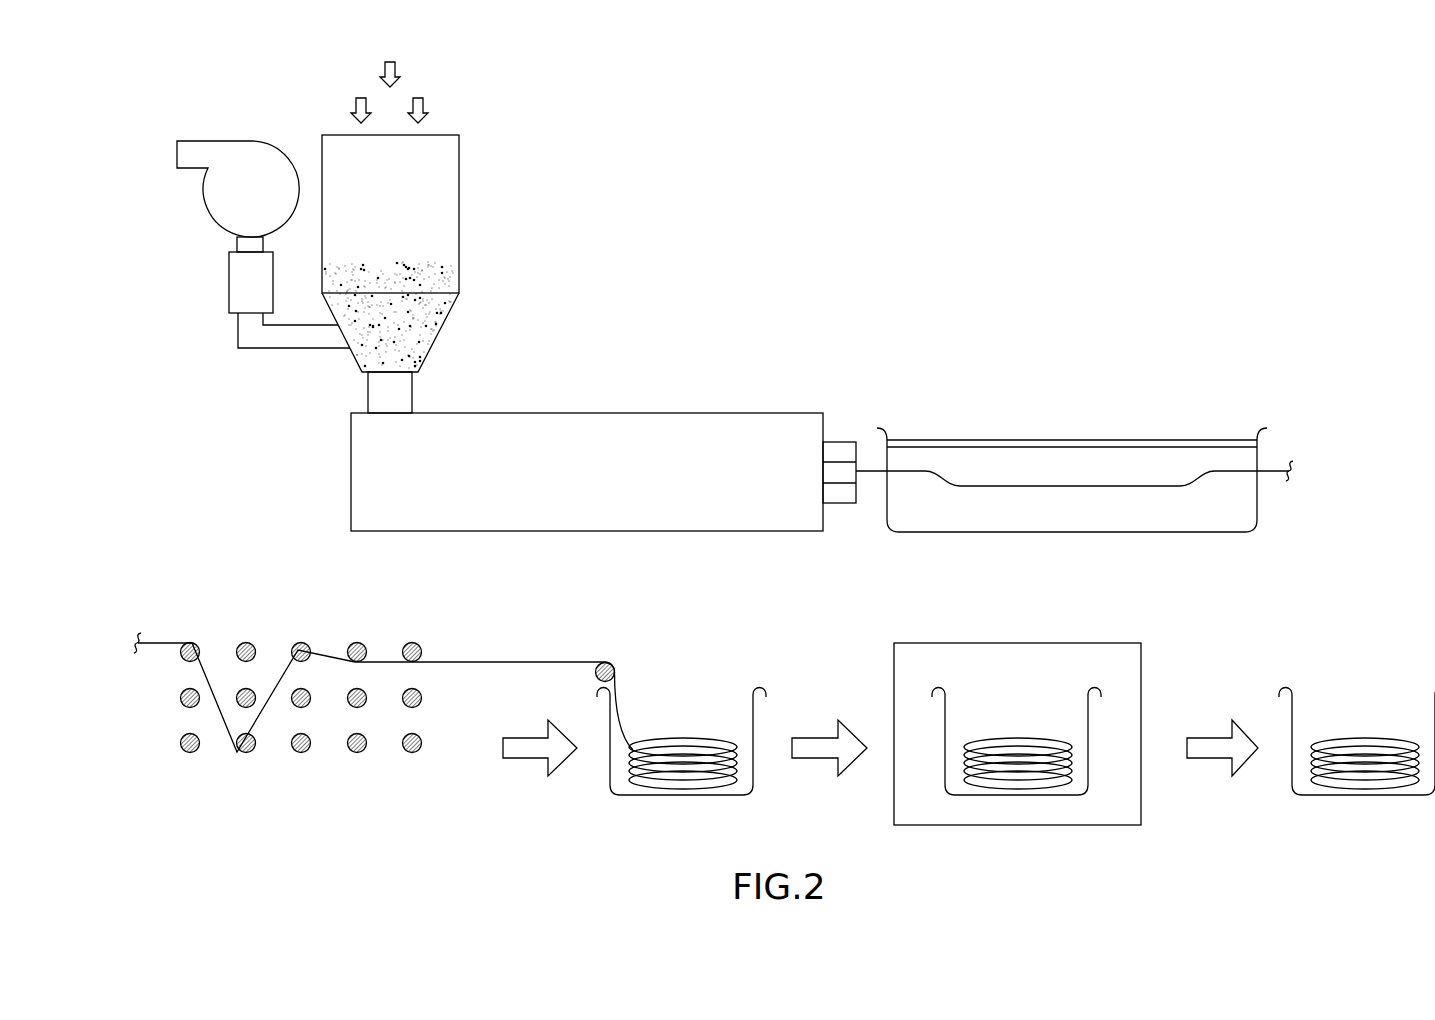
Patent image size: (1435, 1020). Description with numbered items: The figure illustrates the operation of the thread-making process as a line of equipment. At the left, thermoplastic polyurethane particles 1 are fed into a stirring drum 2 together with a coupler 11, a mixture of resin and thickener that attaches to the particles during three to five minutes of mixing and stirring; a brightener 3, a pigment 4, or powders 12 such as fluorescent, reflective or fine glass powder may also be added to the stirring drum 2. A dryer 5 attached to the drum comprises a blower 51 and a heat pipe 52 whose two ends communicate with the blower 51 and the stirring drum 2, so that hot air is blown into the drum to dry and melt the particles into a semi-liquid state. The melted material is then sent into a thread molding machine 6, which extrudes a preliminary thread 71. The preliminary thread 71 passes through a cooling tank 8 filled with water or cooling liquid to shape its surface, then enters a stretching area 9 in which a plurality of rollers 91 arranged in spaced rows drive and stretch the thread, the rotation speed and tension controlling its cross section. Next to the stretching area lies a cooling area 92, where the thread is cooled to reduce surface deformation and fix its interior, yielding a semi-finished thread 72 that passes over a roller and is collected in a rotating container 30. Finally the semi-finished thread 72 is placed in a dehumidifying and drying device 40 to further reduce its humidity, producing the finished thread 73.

The thermoplastic polyurethane particles 1 is at (437, 275).
The coupler 11 is at (453, 302).
The powders 12 is at (394, 70).
The stirring drum 2 is at (459, 190).
The brightener 3 is at (353, 103).
The pigment 4 is at (425, 105).
The dryer 5 is at (216, 264).
The blower 51 is at (210, 215).
The heat pipe 52 is at (123, 248).
The thread molding machine 6 is at (612, 413).
The preliminary thread 71 is at (865, 471).
The cooling tank 8 is at (1257, 455).
The stretching area 9 is at (278, 727).
The rollers 91 is at (307, 648).
The cooling area 92 is at (488, 675).
The semi-finished thread 72 is at (517, 662).
The container 30 is at (635, 797).
The dehumidifying and drying device 40 is at (1095, 643).
The finished thread 73 is at (1352, 738).